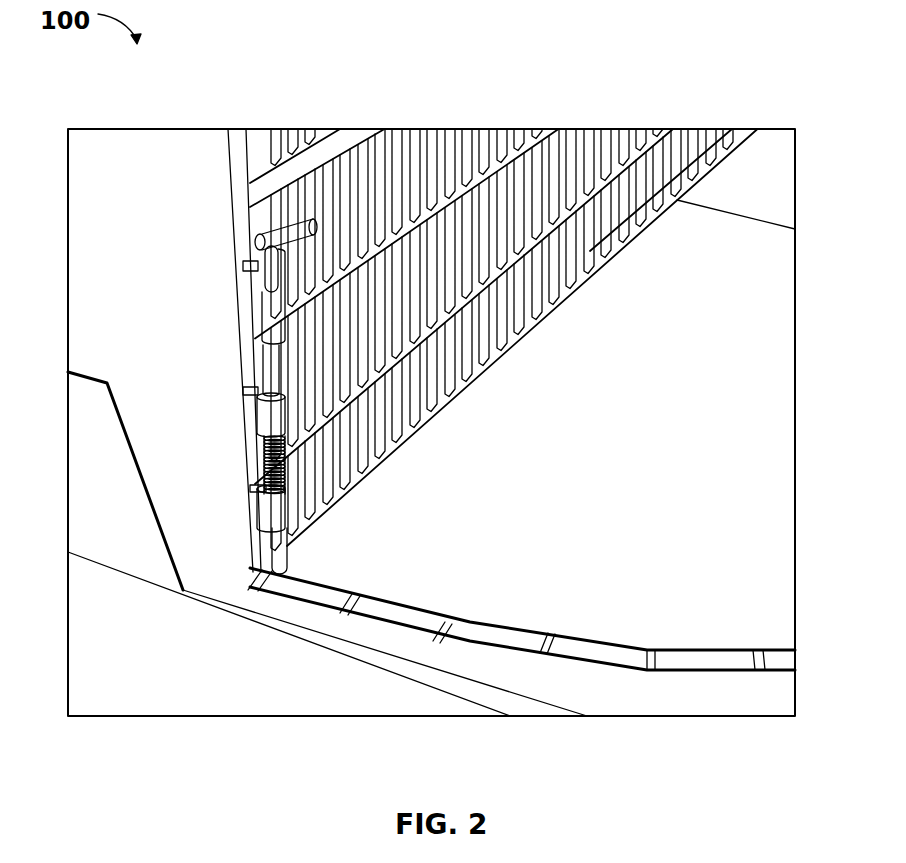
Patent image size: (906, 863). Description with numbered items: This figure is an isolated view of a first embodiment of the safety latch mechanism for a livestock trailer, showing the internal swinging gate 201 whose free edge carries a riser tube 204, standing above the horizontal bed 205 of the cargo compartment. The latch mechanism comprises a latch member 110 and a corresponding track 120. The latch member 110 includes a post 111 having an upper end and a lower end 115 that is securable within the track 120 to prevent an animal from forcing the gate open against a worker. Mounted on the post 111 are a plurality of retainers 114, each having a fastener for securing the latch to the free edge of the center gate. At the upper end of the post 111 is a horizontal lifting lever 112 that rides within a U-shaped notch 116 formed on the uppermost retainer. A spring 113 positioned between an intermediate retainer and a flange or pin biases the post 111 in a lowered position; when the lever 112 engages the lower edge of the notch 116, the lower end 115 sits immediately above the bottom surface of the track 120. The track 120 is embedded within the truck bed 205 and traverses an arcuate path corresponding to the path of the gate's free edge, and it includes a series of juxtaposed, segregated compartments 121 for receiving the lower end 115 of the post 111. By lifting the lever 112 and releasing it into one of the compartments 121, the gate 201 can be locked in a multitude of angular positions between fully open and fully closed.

The latch member 110 is at (292, 555).
The post 111 is at (268, 368).
The lifting lever 112 is at (290, 226).
The spring 113 is at (268, 467).
The retainers 114 is at (268, 318).
The lower end 115 is at (270, 558).
The U-shaped notch 116 is at (268, 270).
The track 120 is at (615, 668).
The compartments 121 is at (734, 666).
The internal swinging gate 201 is at (542, 136).
The riser tube 204 is at (232, 145).
The horizontal bed 205 is at (768, 405).